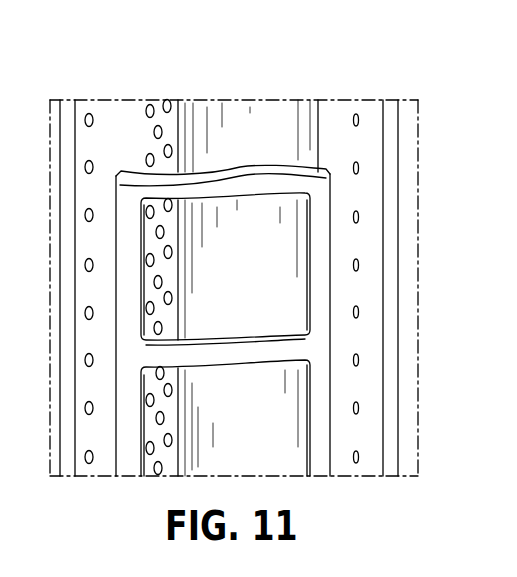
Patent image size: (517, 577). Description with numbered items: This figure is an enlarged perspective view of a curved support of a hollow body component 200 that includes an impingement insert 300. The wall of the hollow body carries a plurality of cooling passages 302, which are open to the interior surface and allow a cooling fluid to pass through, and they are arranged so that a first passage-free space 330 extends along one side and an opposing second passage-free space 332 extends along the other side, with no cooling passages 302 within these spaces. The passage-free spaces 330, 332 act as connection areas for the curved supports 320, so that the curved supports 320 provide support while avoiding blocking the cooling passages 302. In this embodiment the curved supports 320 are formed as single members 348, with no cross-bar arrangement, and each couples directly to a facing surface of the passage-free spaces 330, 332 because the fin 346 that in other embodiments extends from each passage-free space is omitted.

The hollow body component 200 is at (235, 240).
The impingement insert 300 is at (235, 240).
The cooling passages 302 is at (90, 166).
The curved supports 320 is at (235, 276).
The first passage-free space 330 is at (110, 360).
The second passage-free space 332 is at (337, 233).
The fin 346 is at (128, 280).
The single members 348 is at (270, 167).